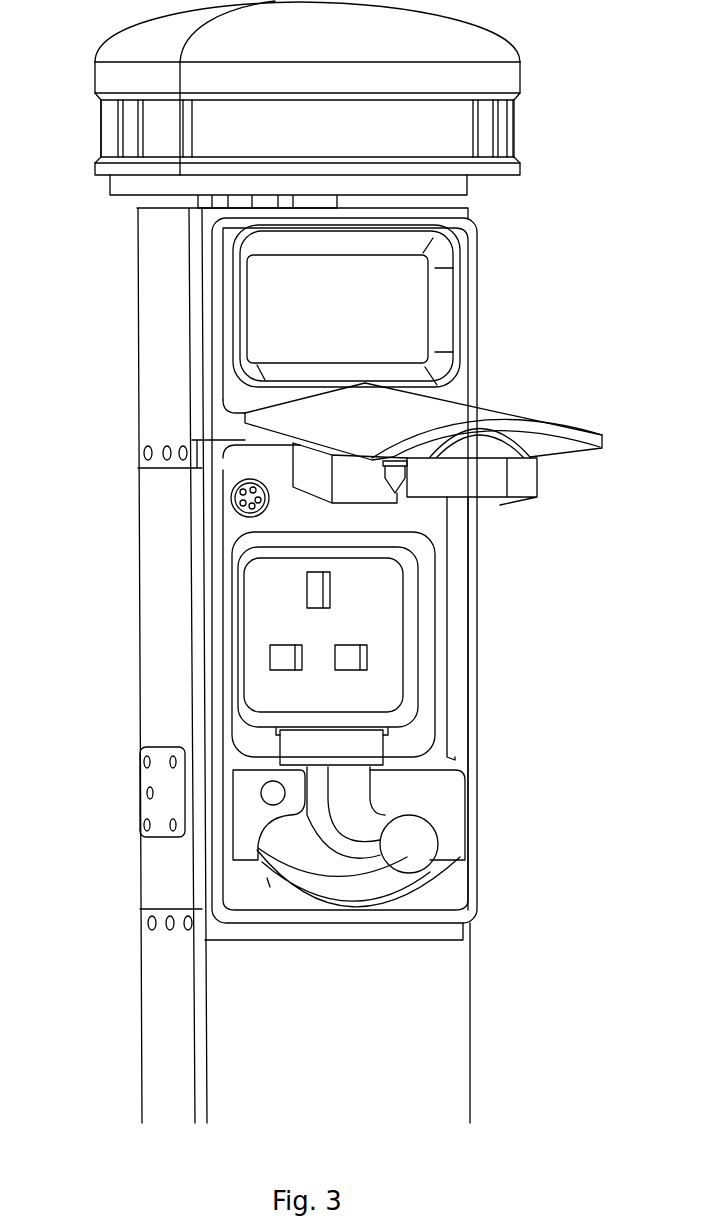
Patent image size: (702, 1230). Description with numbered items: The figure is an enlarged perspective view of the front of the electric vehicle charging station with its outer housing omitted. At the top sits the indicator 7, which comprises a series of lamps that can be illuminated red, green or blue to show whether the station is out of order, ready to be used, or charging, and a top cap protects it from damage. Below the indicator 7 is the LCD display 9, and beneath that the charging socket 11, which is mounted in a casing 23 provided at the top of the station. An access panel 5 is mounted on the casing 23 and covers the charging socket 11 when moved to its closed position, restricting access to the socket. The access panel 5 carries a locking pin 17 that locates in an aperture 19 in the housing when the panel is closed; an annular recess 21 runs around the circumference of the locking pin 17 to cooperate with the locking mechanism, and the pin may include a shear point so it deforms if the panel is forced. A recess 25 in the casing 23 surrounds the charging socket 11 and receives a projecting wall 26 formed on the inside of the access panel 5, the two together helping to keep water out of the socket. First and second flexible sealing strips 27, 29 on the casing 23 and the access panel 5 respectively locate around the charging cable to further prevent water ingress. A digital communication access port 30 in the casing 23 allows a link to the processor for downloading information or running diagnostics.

The access panel 5 is at (477, 413).
The indicator 7 is at (455, 137).
The LCD display 9 is at (393, 295).
The charging socket 11 is at (387, 660).
The locking pin 17 is at (380, 478).
The aperture 19 is at (275, 798).
The annular recess 21 is at (398, 490).
The casing 23 is at (248, 910).
The recess 25 is at (420, 708).
The projecting wall 26 is at (527, 505).
The first flexible sealing strip 27 is at (348, 787).
The second flexible sealing strip 29 is at (483, 500).
The digital communication access port 30 is at (232, 502).